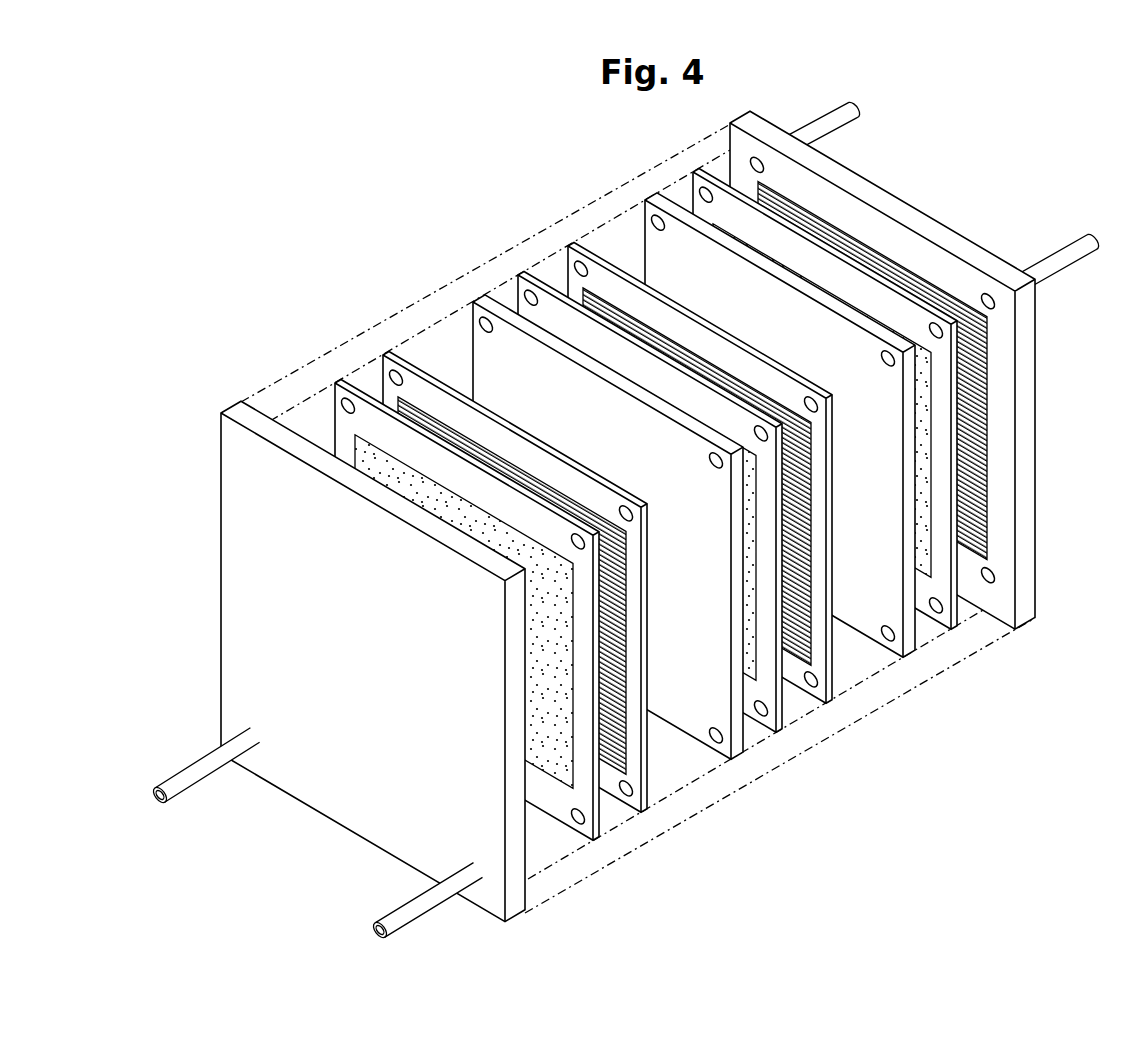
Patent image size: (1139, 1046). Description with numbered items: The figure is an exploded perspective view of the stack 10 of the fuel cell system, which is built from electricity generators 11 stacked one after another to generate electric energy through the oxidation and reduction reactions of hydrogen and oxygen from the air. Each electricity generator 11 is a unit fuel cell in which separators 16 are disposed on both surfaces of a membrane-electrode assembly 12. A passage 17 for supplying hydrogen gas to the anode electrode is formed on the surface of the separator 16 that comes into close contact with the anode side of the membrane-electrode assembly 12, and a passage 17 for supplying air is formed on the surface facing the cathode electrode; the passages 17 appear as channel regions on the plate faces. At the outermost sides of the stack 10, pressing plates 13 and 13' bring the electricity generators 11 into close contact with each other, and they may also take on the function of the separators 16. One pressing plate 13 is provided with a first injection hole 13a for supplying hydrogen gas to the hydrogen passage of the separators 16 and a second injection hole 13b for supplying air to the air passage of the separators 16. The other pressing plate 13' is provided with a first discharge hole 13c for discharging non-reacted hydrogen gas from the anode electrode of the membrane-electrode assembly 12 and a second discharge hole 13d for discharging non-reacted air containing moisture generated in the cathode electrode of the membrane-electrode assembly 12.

The stack 10 is at (540, 175).
The electricity generator 11 is at (780, 544).
The membrane-electrode assembly 12 is at (796, 730).
The pressing plate 13 is at (906, 370).
The pressing plate 13' is at (402, 674).
The first injection hole 13a is at (850, 101).
The second injection hole 13b is at (1084, 234).
The first discharge hole 13c is at (385, 917).
The second discharge hole 13d is at (180, 771).
The separator 16 is at (780, 534).
The passage 17 is at (803, 636).